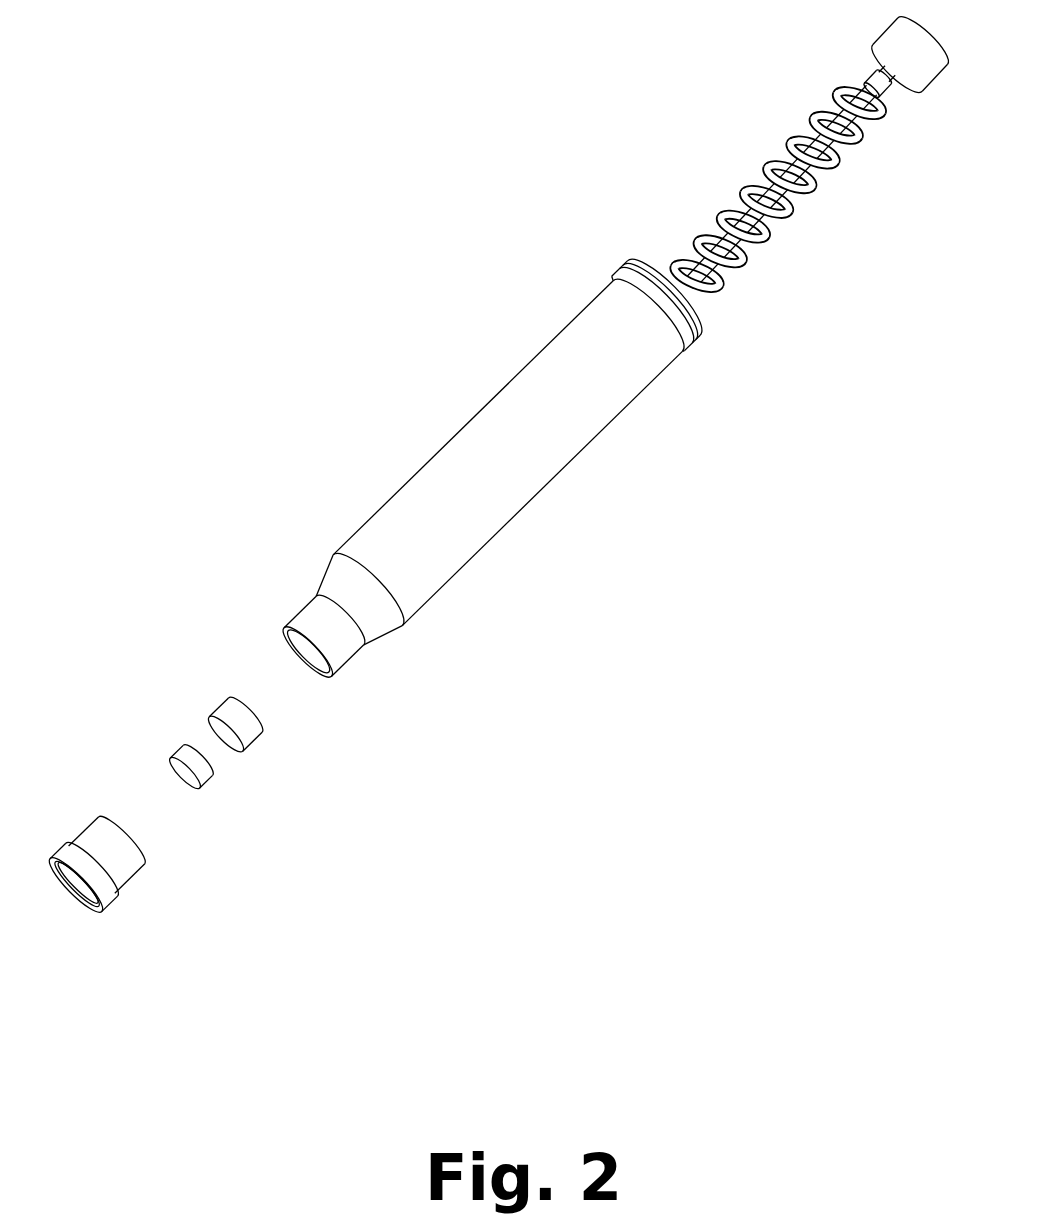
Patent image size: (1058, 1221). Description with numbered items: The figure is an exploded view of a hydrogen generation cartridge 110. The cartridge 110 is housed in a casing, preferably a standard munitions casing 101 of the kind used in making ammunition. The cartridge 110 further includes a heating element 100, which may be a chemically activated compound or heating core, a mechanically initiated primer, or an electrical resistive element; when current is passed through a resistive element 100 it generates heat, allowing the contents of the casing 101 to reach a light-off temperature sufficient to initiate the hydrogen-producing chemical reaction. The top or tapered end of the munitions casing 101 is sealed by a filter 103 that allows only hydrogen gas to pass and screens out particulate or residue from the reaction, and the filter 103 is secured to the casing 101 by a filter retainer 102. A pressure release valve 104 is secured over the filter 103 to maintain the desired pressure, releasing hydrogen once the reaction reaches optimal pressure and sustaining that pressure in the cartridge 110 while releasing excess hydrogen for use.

The heating element 100 is at (817, 122).
The munitions casing 101 is at (513, 423).
The filter retainer 102 is at (248, 727).
The filter 103 is at (205, 782).
The pressure release valve 104 is at (118, 873).
The hydrogen generation cartridge 110 is at (610, 350).